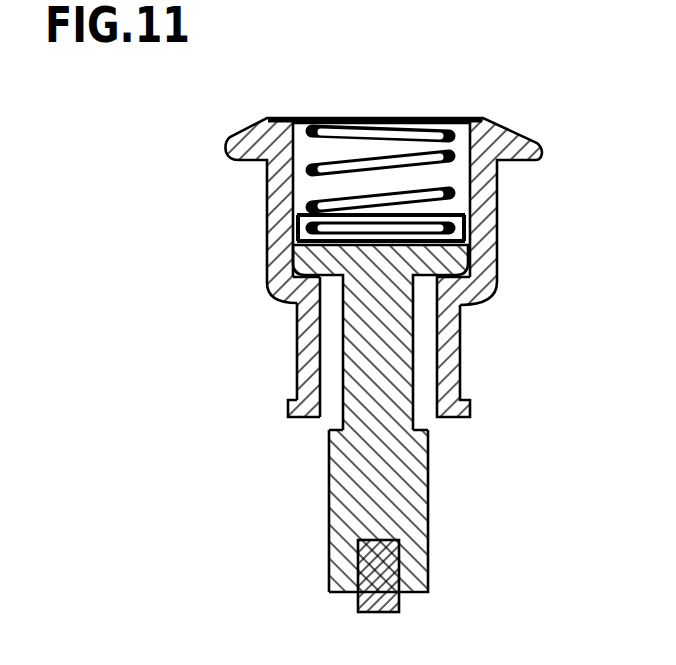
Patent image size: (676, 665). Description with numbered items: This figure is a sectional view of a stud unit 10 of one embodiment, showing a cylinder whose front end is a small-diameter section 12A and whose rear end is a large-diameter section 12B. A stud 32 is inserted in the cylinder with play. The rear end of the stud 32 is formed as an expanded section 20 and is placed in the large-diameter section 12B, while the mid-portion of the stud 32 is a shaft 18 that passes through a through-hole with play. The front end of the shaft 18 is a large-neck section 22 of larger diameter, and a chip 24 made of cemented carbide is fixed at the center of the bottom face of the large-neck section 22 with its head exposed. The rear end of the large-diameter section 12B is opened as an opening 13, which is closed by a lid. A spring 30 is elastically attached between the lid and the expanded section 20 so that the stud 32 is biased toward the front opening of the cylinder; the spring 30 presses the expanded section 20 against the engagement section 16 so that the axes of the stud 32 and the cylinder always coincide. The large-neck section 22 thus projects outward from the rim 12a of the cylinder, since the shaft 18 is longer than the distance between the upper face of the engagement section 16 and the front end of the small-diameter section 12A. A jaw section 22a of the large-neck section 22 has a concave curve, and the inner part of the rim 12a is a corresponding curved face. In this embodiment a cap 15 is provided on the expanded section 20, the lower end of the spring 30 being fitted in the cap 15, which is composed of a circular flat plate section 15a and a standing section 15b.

The stud unit 10 is at (490, 86).
The small-diameter section 12A is at (461, 331).
The large-diameter section 12B is at (498, 207).
The rim 12a is at (310, 418).
The opening 13 is at (402, 119).
The cap 15 is at (293, 240).
The circular flat plate section 15a is at (297, 285).
The standing section 15b is at (293, 214).
The engagement section 16 is at (462, 304).
The shaft 18 is at (330, 340).
The expanded section 20 is at (496, 256).
The large-neck section 22 is at (412, 490).
The jaw section 22a is at (417, 427).
The chip 24 is at (392, 612).
The spring 30 is at (358, 130).
The stud 32 is at (326, 502).